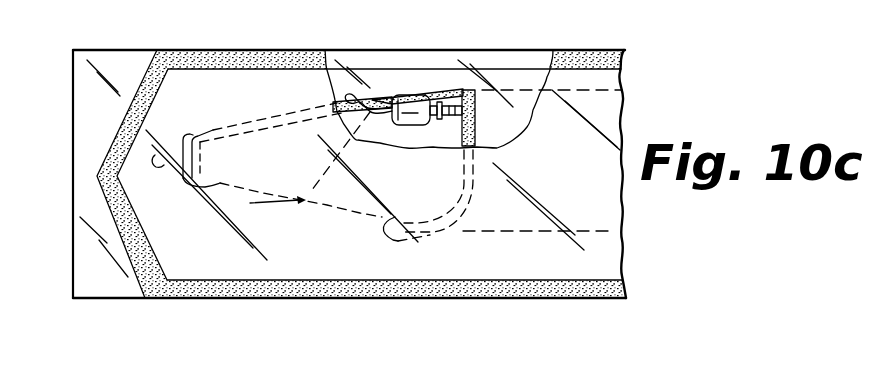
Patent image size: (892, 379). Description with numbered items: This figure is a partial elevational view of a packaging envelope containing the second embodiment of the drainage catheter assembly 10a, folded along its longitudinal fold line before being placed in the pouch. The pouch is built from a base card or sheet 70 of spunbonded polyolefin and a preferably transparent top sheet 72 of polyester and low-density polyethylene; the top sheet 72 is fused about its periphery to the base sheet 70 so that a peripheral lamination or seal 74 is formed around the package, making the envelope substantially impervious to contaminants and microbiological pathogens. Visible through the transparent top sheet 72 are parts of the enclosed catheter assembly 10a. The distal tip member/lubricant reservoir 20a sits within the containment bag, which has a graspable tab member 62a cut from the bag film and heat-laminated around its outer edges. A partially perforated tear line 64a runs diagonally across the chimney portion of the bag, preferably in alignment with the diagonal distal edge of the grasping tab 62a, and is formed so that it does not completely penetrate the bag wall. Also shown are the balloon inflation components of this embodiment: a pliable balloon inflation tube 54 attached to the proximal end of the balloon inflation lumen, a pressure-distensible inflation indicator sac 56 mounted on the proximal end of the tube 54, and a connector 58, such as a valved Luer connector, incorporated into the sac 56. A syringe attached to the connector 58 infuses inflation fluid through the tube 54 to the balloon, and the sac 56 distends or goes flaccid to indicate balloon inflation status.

The catheter assembly 10a is at (640, 95).
The top sheet 72 is at (116, 0).
The peripheral lamination or seal 74 is at (128, 110).
The base card or sheet 70 is at (98, 242).
The distal tip member/lubricant reservoir 20a is at (181, 157).
The perforation tear line 64a is at (313, 184).
The graspable tab member 62a is at (363, 238).
The balloon inflation tube 54 is at (353, 98).
The inflation indicator sac 56 is at (416, 102).
The connector 58 is at (469, 91).